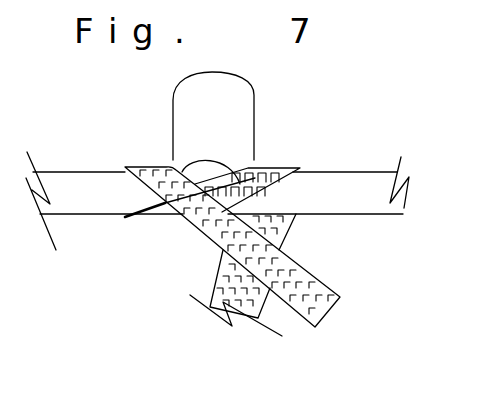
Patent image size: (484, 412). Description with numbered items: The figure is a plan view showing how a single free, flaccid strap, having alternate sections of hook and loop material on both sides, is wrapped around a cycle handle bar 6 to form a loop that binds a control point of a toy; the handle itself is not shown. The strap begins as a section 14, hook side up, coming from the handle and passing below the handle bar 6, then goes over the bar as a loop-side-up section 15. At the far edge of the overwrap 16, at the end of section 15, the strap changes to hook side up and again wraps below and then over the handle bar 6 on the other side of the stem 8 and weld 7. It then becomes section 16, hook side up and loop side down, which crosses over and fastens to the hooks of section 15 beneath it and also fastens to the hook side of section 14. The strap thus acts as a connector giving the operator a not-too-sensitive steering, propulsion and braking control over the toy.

The handle bar 6 is at (352, 193).
The weld 7 is at (203, 172).
The stem 8 is at (256, 88).
The section of free, flaccid strap, hook side up 14 is at (221, 272).
The strap section, loop side up 15 is at (328, 143).
The overwrap section, hook side up 16 is at (168, 192).